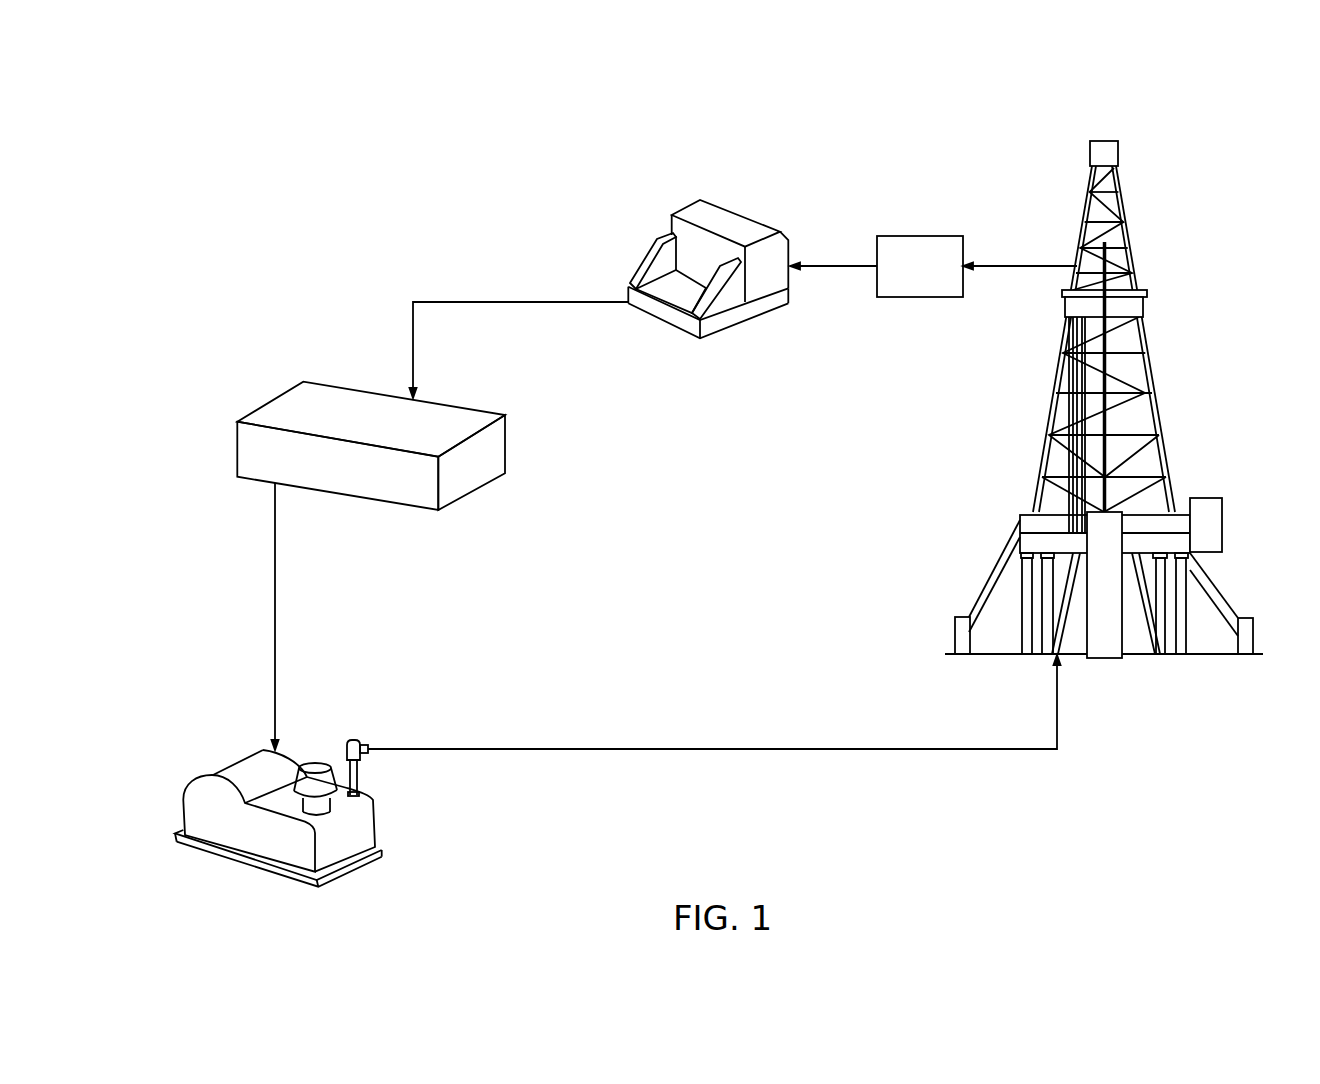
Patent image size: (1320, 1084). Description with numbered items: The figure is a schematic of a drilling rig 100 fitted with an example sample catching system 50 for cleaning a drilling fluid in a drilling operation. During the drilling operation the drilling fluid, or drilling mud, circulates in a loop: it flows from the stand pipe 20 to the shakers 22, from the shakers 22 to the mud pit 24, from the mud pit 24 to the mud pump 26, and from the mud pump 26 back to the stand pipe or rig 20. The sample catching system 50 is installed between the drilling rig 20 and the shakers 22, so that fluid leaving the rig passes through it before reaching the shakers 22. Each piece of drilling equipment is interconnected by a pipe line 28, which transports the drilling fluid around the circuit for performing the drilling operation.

The drilling rig 100 is at (430, 156).
The stand pipe 20 is at (1118, 150).
The shakers 22 is at (732, 212).
The mud pit 24 is at (363, 410).
The mud pump 26 is at (290, 750).
The pipe line 28 is at (837, 264).
The sample catching system 50 is at (936, 277).